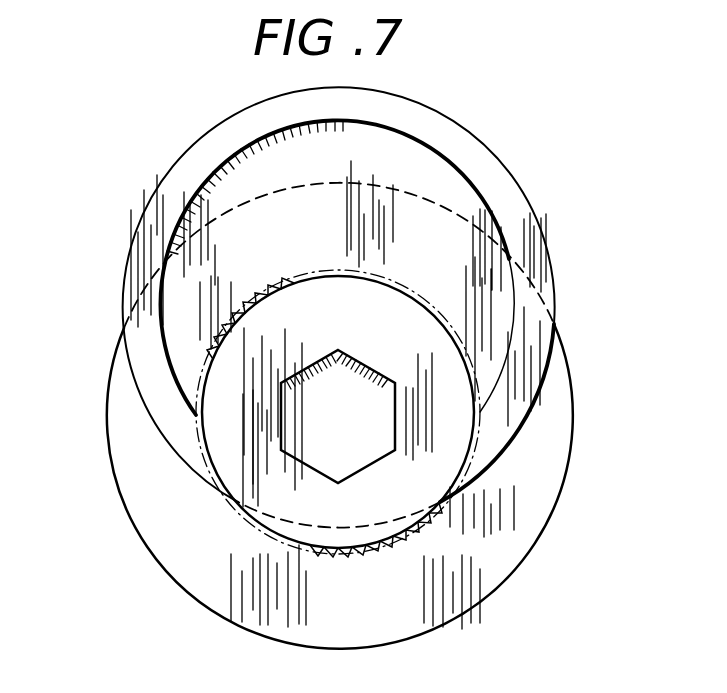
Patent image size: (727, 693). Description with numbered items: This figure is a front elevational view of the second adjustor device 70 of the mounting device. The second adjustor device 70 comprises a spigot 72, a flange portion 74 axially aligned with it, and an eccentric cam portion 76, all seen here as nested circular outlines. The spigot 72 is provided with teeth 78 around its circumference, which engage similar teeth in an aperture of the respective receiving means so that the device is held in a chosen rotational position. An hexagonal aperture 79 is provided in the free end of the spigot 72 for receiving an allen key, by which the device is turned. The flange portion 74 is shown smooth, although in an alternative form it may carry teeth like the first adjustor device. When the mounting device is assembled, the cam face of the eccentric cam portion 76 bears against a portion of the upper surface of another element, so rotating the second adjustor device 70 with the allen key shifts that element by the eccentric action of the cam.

The second adjustor device 70 is at (105, 458).
The spigot 72 is at (228, 448).
The flange portion 74 is at (553, 393).
The eccentric cam portion 76 is at (433, 117).
The teeth 78 is at (273, 290).
The hexagonal aperture 79 is at (360, 377).